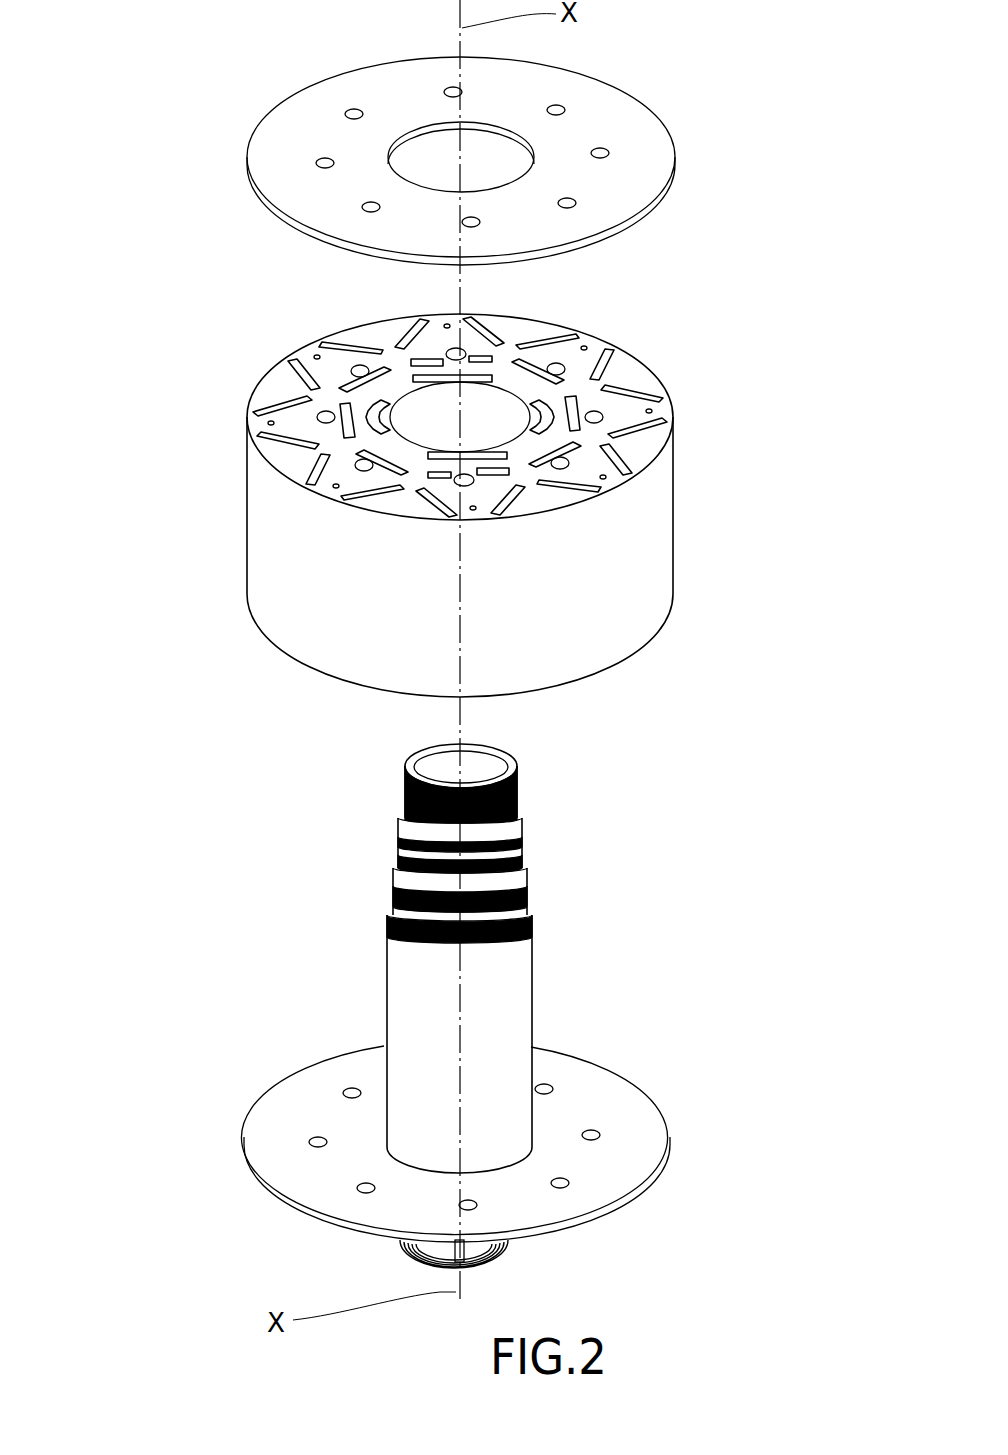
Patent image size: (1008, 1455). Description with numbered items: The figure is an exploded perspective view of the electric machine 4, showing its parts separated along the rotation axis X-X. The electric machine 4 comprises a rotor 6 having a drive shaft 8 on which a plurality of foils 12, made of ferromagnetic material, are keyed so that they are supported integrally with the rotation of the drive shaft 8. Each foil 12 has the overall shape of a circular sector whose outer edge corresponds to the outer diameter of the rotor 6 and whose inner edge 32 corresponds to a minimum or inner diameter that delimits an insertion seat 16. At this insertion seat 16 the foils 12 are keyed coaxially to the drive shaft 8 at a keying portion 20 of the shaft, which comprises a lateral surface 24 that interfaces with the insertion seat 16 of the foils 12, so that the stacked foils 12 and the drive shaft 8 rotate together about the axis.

The electric machine 4 is at (70, 166).
The rotor 6 is at (487, 489).
The foils 12 is at (674, 518).
The drive shaft 8 is at (495, 992).
The insertion seat 16 is at (497, 418).
The inner edge 32 is at (408, 400).
The lateral surface 24 is at (334, 1034).
The keying portion 20 is at (386, 989).